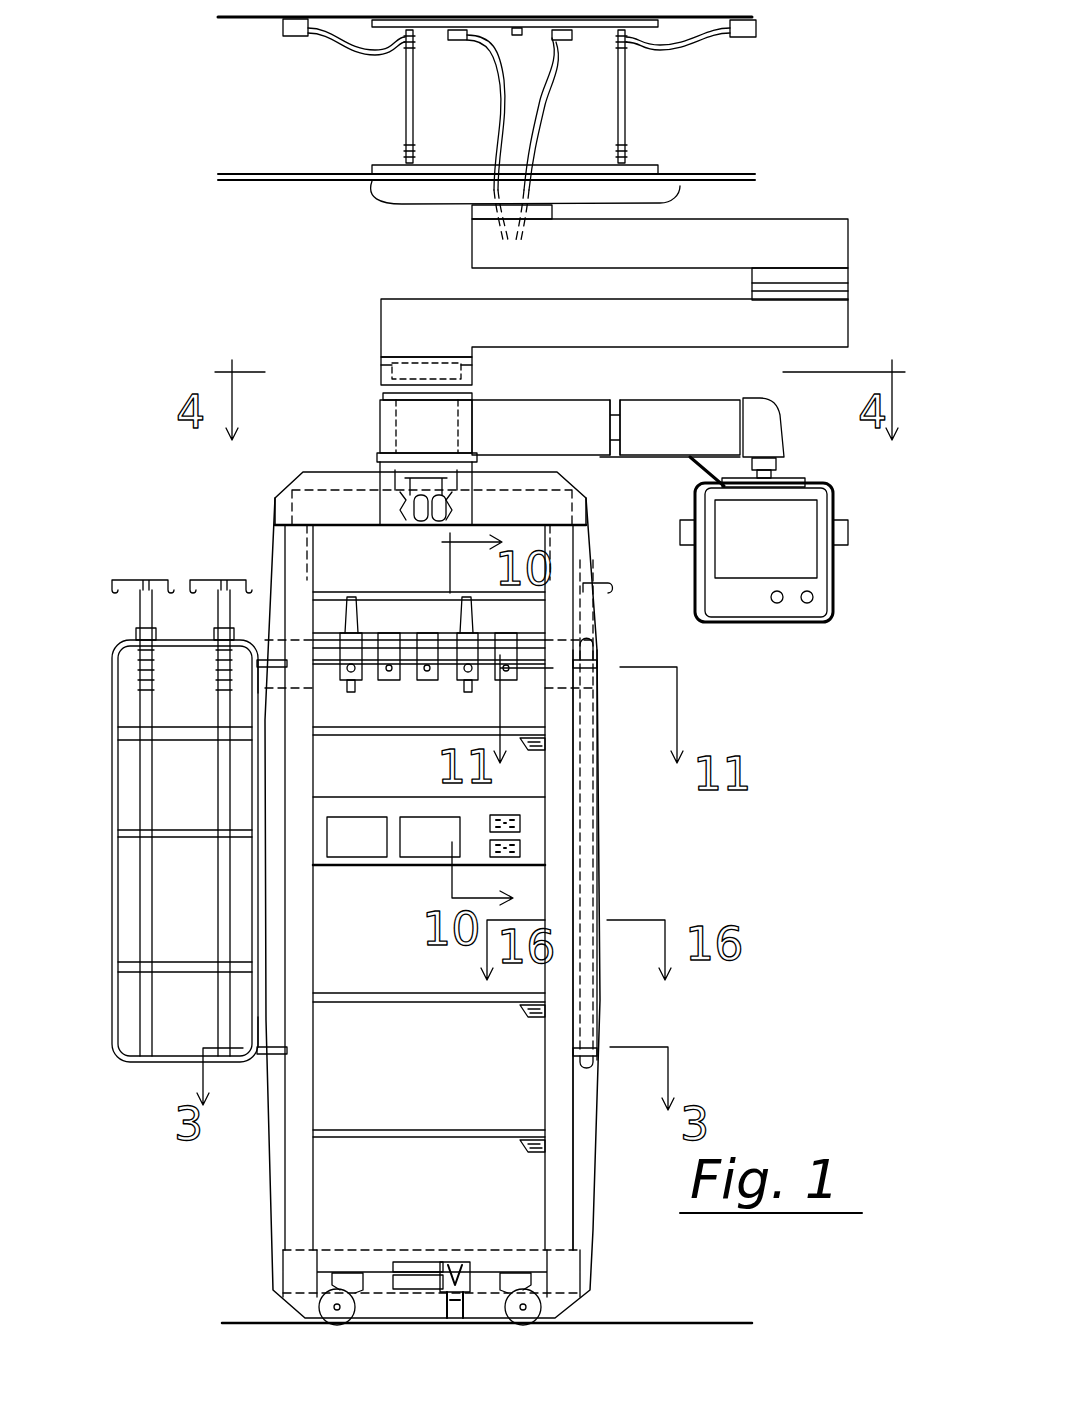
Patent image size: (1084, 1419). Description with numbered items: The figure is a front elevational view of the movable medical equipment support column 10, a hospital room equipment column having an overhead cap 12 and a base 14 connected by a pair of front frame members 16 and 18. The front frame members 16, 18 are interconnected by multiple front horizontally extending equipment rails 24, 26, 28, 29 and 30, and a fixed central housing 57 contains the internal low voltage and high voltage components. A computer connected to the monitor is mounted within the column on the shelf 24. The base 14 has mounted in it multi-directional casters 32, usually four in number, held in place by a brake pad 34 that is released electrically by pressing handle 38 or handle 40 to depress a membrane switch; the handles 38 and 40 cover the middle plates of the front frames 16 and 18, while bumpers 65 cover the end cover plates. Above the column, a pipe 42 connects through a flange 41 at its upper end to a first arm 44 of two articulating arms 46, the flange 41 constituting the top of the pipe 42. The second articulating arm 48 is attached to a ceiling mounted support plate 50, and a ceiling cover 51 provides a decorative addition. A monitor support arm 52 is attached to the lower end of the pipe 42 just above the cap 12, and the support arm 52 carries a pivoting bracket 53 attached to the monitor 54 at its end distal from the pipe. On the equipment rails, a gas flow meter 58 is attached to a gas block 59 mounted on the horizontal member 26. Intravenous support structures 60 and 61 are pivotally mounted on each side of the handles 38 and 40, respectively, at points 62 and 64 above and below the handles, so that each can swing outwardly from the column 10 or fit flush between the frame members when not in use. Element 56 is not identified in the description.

The movable medical equipment support column 10 is at (794, 950).
The overhead cap 12 is at (337, 470).
The base 14 is at (590, 1313).
The front frame member 16 is at (560, 898).
The front frame member 18 is at (298, 1163).
The equipment rail 24 is at (375, 592).
The equipment rail 26 is at (533, 634).
The equipment rail 28 is at (422, 734).
The equipment rail 29 is at (335, 998).
The equipment rail 30 is at (338, 1125).
The multi-directional casters 32 is at (340, 1327).
The brake pad 34 is at (444, 1321).
The handle 38 is at (598, 843).
The handle 40 is at (268, 915).
The flange 41 is at (463, 372).
The pipe 42 is at (396, 400).
The first arm 44 is at (392, 348).
The articulating arms 46 is at (857, 159).
The second articulating arm 48 is at (824, 228).
The ceiling mounted support plate 50 is at (612, 165).
The ceiling cover 51 is at (637, 187).
The monitor support arm 52 is at (573, 400).
The pivoting bracket 53 is at (782, 448).
The monitor 54 is at (836, 508).
The electrical panel 56 is at (338, 843).
The fixed central housing 57 is at (525, 808).
The gas flow meter 58 is at (457, 614).
The gas block 59 is at (427, 680).
The I.V. support structure 60 is at (592, 997).
The I.V. support structure 61 is at (116, 755).
The pivot point 62 is at (592, 661).
The pivot point 64 is at (588, 1053).
The bumpers 65 is at (605, 552).